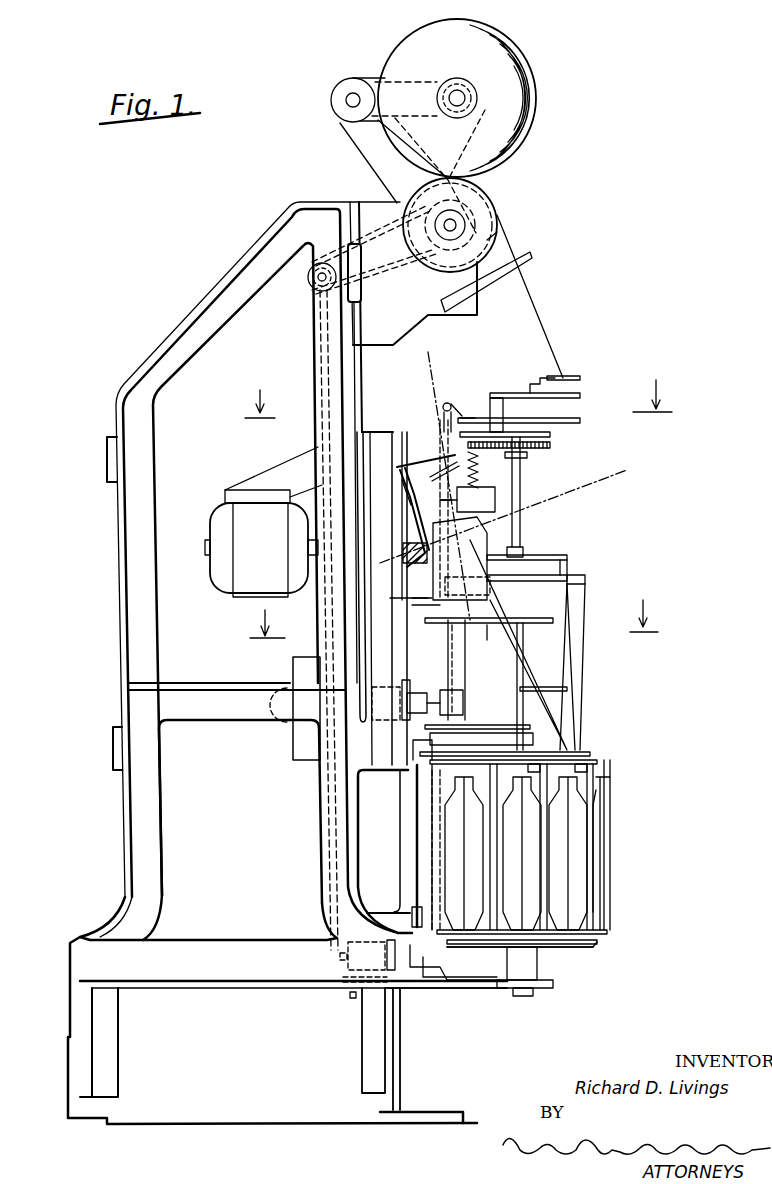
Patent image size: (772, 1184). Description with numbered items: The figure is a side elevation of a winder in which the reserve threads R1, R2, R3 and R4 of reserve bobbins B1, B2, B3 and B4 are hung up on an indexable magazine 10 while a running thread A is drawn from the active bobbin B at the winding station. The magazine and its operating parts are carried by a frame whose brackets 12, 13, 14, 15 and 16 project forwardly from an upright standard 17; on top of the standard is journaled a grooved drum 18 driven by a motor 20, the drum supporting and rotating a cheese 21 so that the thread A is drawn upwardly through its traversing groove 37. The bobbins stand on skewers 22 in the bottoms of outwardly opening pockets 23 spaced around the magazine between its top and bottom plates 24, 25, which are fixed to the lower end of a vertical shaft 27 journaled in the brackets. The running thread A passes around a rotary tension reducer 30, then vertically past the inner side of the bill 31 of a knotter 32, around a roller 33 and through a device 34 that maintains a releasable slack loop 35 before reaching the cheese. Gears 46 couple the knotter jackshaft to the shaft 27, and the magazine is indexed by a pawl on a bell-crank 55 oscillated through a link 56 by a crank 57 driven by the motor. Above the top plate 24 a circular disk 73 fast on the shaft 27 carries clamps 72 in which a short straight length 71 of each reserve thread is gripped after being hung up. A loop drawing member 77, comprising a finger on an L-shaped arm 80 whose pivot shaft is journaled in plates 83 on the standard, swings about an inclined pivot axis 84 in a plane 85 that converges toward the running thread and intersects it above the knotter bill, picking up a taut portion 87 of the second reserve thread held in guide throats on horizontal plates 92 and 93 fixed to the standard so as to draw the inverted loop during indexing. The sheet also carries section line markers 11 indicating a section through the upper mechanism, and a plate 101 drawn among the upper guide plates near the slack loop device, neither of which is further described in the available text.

The indexable magazine 10 is at (616, 793).
The section line 11- 11 is at (458, 386).
The bracket 12 is at (430, 1018).
The bracket 13 is at (492, 735).
The bracket 14 is at (535, 575).
The bracket 15 is at (428, 495).
The bracket 16 is at (418, 440).
The upright standard 17 is at (376, 632).
The grooved drum 18 is at (498, 213).
The motor 20 is at (258, 560).
The cheese 21 is at (500, 50).
The skewers 22 is at (570, 935).
The pockets 23 is at (588, 774).
The top plate 24 is at (580, 750).
The bottom plate 25 is at (545, 947).
The vertical shaft 27 is at (516, 530).
The tension reducer 30 is at (441, 677).
The knotter bill 31 is at (452, 500).
The knotter 32 is at (481, 491).
The roller 33 is at (448, 402).
The slack loop device 34 is at (530, 379).
The releasable slack loop 35 is at (579, 391).
The traversing groove 37 is at (487, 240).
The gears 46 is at (482, 449).
The bell-crank 55 is at (547, 990).
The link 56 is at (465, 996).
The crank 57 is at (348, 1002).
The straight length of reserve thread 71 is at (569, 629).
The supporting clamp 72 is at (558, 575).
The circular disk 73 is at (584, 582).
The loop drawing member 77 is at (436, 462).
The arm 80 is at (405, 500).
The spaced plates 83 is at (403, 548).
The pivot axis 84 is at (600, 484).
The plane of swinging 85 is at (428, 352).
The thread portion 87 is at (472, 600).
The horizontal plate 92 is at (425, 600).
The horizontal plate 93 is at (489, 646).
The plate 101 is at (560, 422).
The running thread A is at (532, 300).
The active bobbin B is at (435, 847).
The first reserve bobbin B1 is at (464, 853).
The second reserve bobbin B2 is at (522, 853).
The third reserve bobbin B3 is at (568, 853).
The fourth reserve bobbin B4 is at (607, 850).
The first reserve thread R1 is at (464, 645).
The second reserve thread R2 is at (512, 677).
The third reserve thread R3 is at (533, 665).
The fourth reserve thread R4 is at (585, 700).